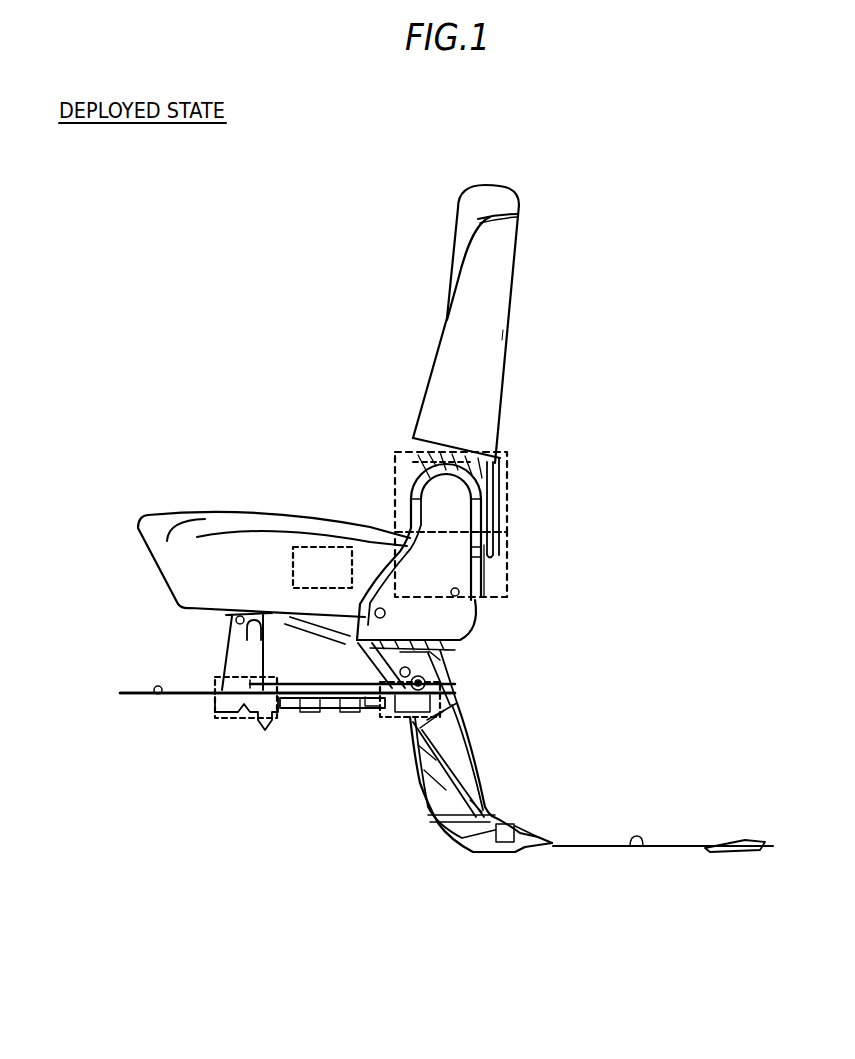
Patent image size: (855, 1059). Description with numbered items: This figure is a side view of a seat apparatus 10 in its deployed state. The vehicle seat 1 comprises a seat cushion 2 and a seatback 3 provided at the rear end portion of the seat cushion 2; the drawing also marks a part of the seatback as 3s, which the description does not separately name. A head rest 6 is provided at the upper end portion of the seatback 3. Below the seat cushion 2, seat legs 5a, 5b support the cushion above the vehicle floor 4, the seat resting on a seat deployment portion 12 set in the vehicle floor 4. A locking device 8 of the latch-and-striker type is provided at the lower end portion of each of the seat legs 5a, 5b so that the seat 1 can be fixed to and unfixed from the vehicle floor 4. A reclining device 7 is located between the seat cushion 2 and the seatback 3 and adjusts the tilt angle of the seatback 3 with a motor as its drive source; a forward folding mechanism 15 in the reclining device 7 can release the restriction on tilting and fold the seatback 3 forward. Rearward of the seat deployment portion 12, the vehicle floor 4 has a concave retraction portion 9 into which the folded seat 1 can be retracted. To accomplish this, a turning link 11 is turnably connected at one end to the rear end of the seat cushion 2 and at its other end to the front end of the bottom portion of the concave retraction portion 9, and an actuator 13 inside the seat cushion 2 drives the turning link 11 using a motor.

The seat 1 is at (517, 190).
The seat cushion 2 is at (207, 516).
The seatback 3 is at (512, 280).
The seat back rear surface 3s is at (510, 328).
The vehicle floor 4 is at (158, 697).
The seat leg 5a is at (232, 656).
The seat leg 5b is at (385, 657).
The head rest 6 is at (458, 222).
The reclining device 7 is at (514, 566).
The locking device 8 is at (233, 720).
The concave retraction portion 9 is at (636, 850).
The seat apparatus 10 is at (290, 254).
The turning link 11 is at (481, 743).
The seat deployment portion 12 is at (302, 702).
The actuator 13 is at (324, 546).
The forward folding mechanism 15 is at (508, 487).